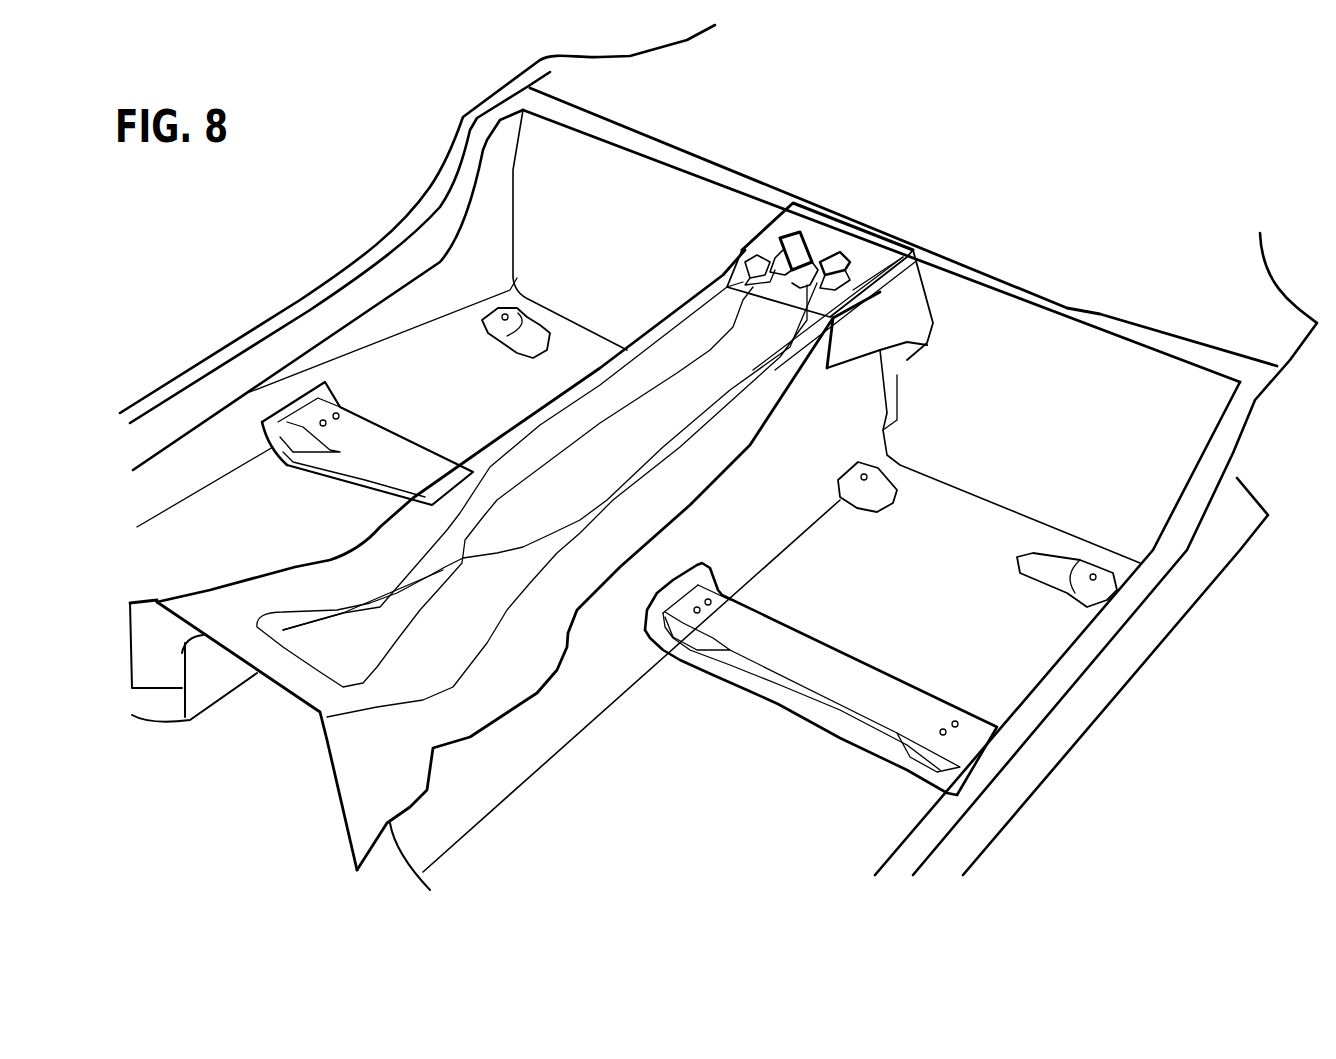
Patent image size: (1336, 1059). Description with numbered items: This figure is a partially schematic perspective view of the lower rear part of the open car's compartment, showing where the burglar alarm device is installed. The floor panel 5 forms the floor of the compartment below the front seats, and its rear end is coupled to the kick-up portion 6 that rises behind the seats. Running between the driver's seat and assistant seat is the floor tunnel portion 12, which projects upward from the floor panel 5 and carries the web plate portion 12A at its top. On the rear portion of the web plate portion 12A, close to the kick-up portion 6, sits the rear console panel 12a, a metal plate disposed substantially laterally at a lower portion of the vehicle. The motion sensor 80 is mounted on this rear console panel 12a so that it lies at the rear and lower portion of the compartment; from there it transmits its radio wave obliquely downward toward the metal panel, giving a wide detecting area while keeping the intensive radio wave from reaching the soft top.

The floor panel 5 is at (687, 806).
The kick-up portion 6 is at (653, 240).
The floor tunnel portion 12 is at (288, 588).
The web plate portion 12A is at (362, 578).
The rear console panel 12a is at (883, 290).
The motion sensor 80 is at (810, 308).